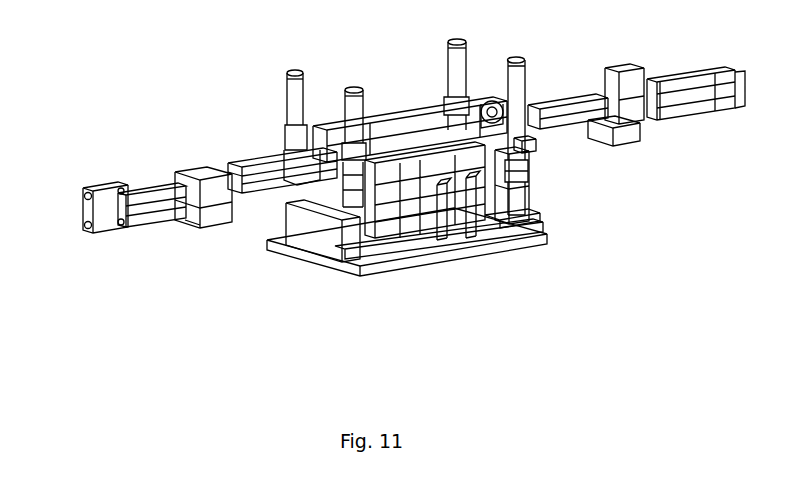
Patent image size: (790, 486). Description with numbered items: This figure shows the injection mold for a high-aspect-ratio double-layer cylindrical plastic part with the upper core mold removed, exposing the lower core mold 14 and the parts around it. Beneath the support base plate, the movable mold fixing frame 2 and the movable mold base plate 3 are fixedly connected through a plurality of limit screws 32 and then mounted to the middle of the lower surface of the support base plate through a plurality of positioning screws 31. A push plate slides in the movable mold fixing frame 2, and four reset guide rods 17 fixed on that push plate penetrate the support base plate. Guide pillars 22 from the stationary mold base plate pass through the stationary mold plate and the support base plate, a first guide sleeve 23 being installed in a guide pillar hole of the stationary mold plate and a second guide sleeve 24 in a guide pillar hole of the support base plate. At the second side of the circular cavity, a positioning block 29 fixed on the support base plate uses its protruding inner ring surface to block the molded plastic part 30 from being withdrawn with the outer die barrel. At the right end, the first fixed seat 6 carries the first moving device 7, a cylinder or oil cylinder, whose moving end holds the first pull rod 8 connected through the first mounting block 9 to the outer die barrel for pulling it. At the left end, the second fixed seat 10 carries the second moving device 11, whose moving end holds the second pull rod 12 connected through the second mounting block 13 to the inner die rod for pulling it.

The movable mold fixing frame 2 is at (328, 242).
The movable mold base plate 3 is at (388, 260).
The first fixed seat 6 is at (189, 177).
The first moving device 7 is at (123, 183).
The first pull rod 8 is at (221, 185).
The first mounting block 9 is at (340, 125).
The second fixed seat 10 is at (643, 122).
The second moving device 11 is at (688, 93).
The second pull rod 12 is at (633, 133).
The second mounting block 13 is at (478, 118).
The lower core mold 14 is at (447, 157).
The reset guide rods 17 is at (388, 173).
The guide pillar 22 is at (520, 87).
The first guide sleeve 23 is at (523, 110).
The second guide sleeve 24 is at (522, 145).
The positioning block 29 is at (368, 165).
The molded plastic part 30 is at (432, 122).
The positioning screws 31 is at (420, 158).
The limit screws 32 is at (358, 262).